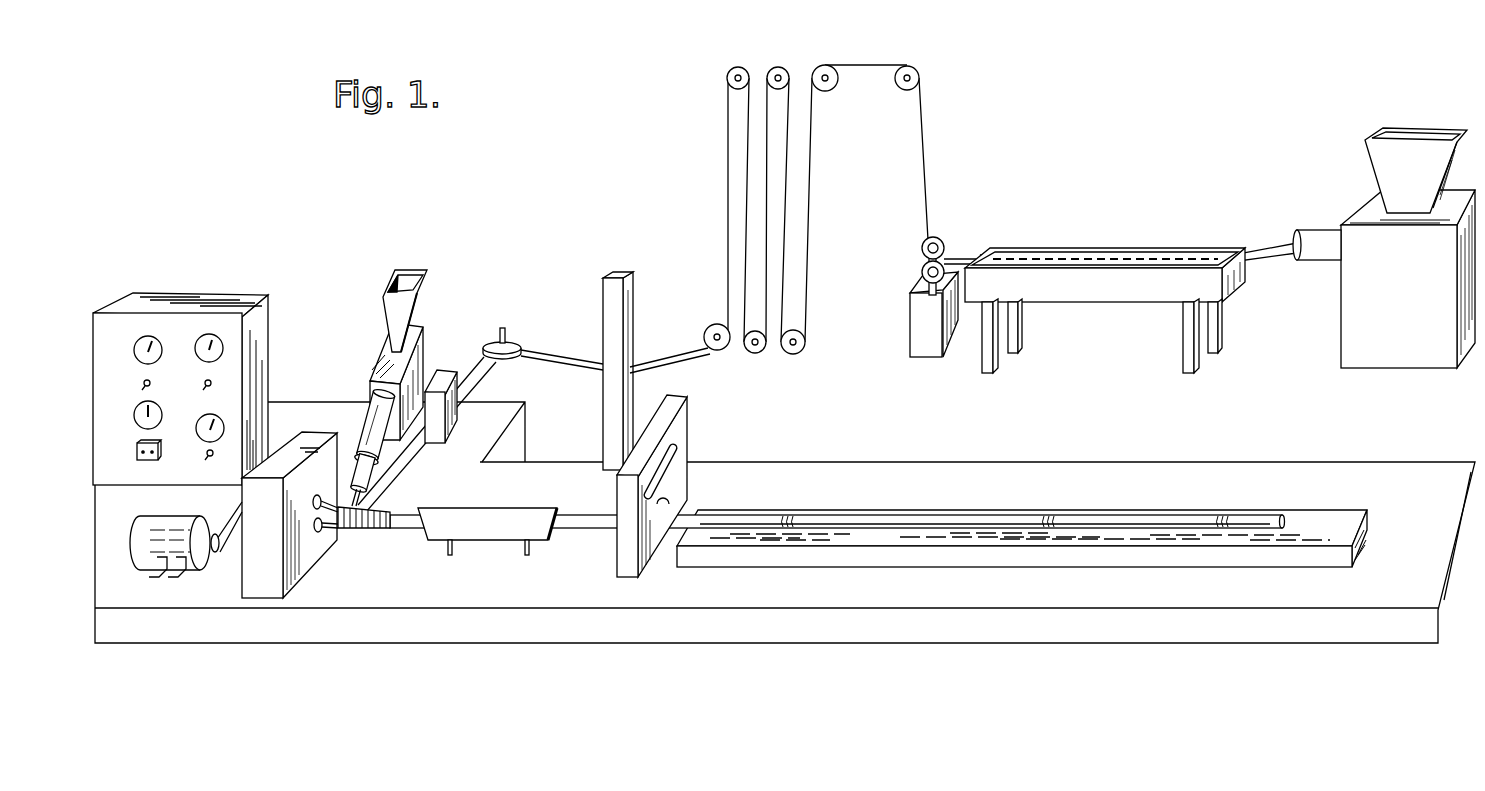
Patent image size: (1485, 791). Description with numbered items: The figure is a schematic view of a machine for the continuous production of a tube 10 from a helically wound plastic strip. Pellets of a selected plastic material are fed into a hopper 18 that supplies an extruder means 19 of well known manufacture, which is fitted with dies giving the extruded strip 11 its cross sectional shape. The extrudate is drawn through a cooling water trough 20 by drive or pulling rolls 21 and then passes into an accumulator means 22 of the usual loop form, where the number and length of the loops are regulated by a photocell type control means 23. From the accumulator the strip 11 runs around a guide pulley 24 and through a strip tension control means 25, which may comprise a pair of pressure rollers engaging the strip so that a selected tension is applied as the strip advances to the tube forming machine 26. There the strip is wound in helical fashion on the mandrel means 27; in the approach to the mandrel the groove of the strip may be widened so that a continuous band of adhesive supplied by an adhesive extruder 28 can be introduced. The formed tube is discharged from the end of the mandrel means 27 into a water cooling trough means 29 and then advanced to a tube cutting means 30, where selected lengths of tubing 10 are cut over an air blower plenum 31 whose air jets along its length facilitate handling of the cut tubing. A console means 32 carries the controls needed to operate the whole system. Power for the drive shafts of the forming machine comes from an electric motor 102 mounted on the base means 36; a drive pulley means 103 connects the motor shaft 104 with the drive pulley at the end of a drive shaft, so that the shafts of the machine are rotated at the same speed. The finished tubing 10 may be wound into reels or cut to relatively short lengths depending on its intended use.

The tube 10 is at (1284, 512).
The extruded strip 11 is at (923, 173).
The hopper 18 is at (1383, 162).
The extruder means 19 is at (1357, 325).
The cooling water trough 20 is at (1110, 247).
The drive or pulling rolls 21 is at (935, 240).
The accumulator means 22 is at (792, 66).
The photocell type control means 23 is at (626, 270).
The guide pulley 24 is at (504, 340).
The strip tension control means 25 is at (444, 368).
The tube forming machine 26 is at (308, 425).
The mandrel means 27 is at (333, 536).
The adhesive extruder 28 is at (377, 357).
The water cooling trough means 29 is at (488, 533).
The tube cutting means 30 is at (614, 568).
The air blower plenum 31 is at (942, 558).
The console means 32 is at (220, 292).
The base means 36 is at (1175, 630).
The electric motor 102 is at (150, 547).
The drive pulley means 103 is at (220, 552).
The motor shaft 104 is at (213, 557).